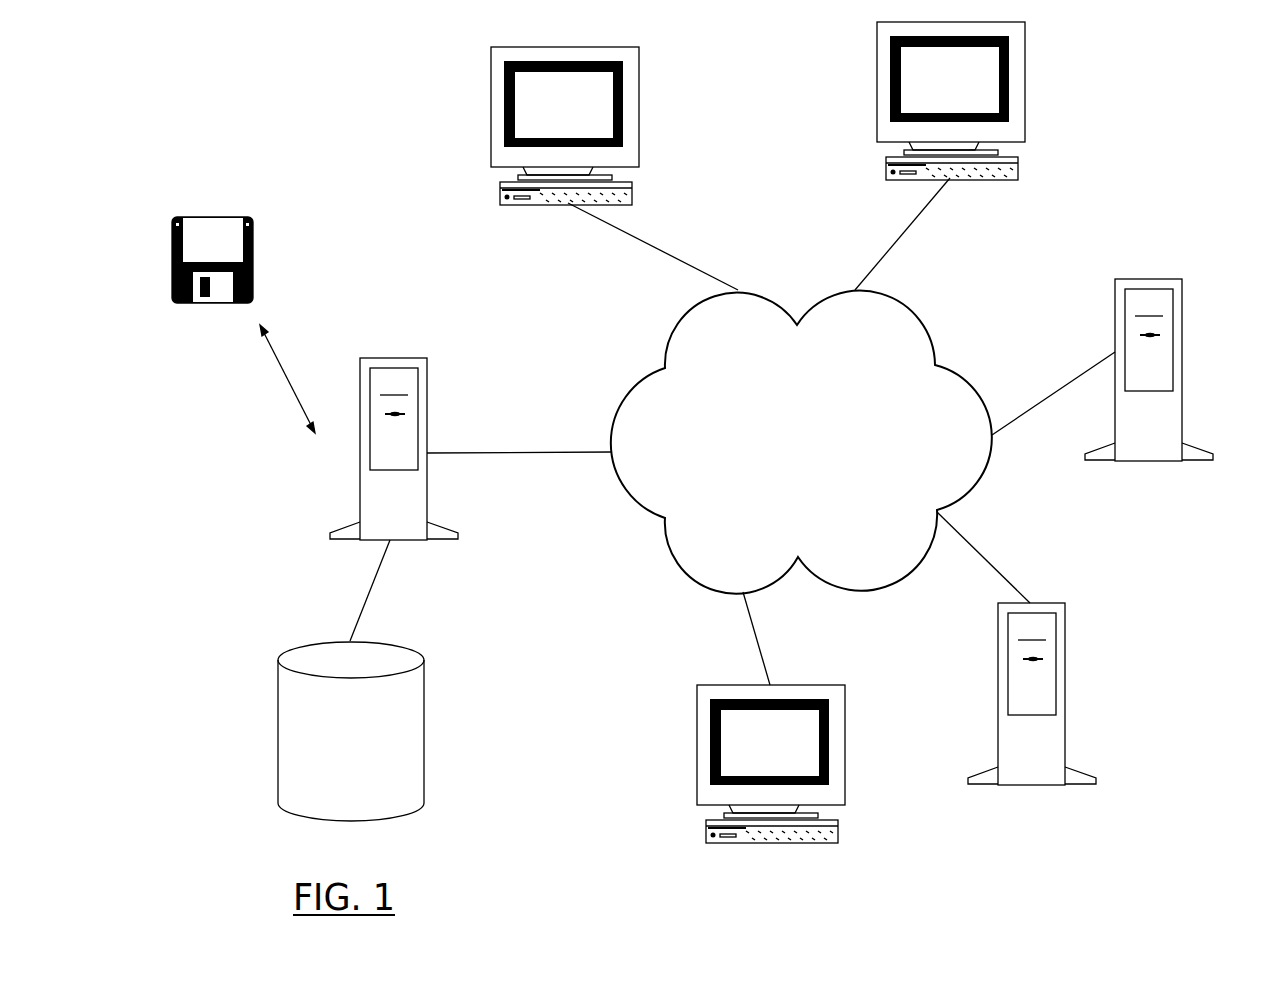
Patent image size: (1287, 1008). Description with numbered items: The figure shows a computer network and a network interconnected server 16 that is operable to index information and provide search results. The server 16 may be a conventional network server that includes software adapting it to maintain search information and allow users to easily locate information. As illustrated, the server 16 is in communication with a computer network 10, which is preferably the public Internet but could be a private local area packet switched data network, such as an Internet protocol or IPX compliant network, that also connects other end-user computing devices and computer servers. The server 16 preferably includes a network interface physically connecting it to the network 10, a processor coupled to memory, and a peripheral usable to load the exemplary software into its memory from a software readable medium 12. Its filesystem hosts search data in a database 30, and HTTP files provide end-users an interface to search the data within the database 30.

The computer network 10 is at (785, 467).
The software readable medium 12 is at (255, 262).
The server 16 is at (427, 375).
The database 30 is at (337, 782).